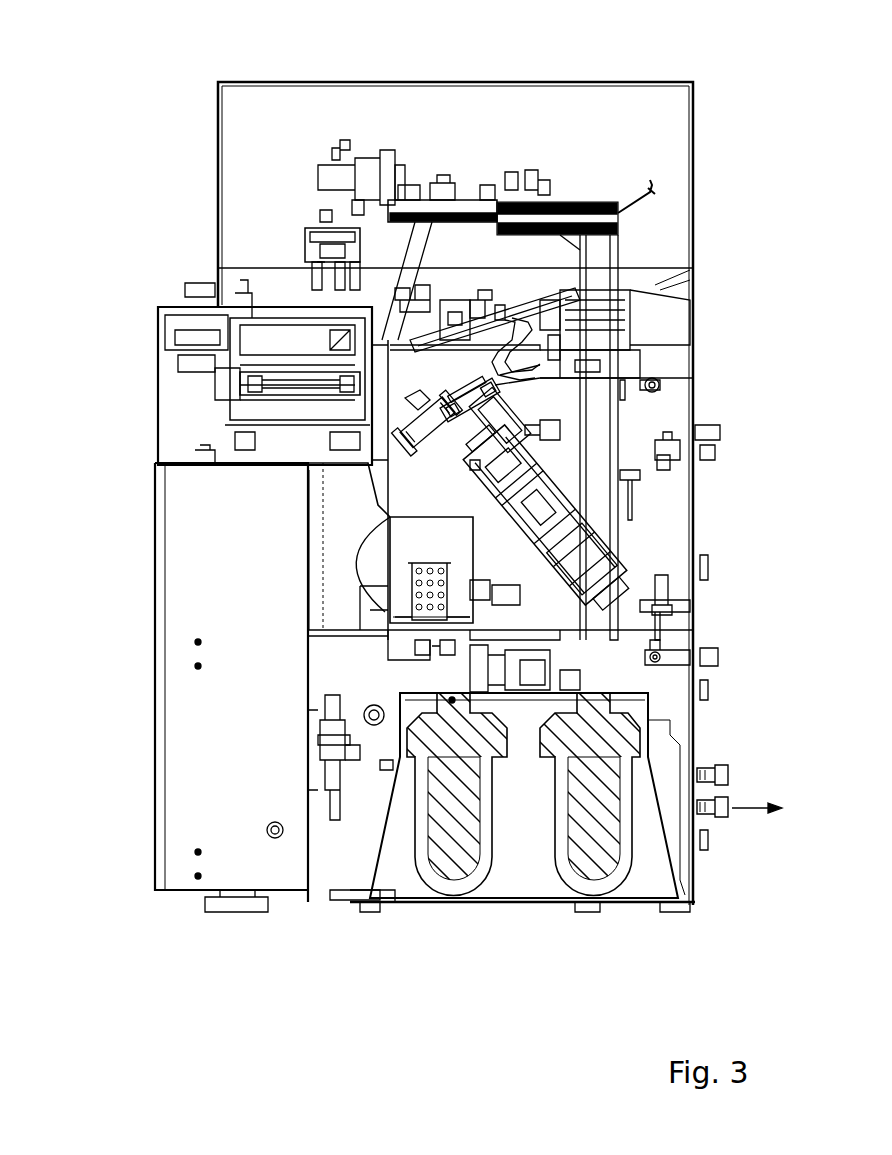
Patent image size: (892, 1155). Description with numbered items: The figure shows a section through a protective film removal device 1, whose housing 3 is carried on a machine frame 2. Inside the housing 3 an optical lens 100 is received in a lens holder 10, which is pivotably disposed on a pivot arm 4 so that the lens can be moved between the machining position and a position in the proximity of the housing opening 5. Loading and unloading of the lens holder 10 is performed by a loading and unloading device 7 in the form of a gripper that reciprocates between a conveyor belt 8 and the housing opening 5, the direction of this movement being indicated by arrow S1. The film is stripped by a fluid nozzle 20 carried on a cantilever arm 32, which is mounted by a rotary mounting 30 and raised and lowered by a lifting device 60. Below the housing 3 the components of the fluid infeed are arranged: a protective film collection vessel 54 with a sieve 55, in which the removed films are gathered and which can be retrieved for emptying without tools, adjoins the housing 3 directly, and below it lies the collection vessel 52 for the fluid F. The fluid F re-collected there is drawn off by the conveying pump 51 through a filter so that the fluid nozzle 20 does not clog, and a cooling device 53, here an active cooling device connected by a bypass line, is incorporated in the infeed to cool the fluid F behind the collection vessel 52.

The protective film removal device 1 is at (135, 84).
The machine frame 2 is at (345, 635).
The housing 3 is at (310, 498).
The pivot arm 4 is at (540, 378).
The housing opening 5 is at (458, 320).
The loading and unloading device 7 is at (338, 252).
The conveyor belt 8 is at (278, 347).
The lens holder 10 is at (480, 400).
The fluid nozzle 20 is at (462, 388).
The rotary mounting 30 is at (500, 397).
The cantilever arm 32 is at (428, 459).
The conveying pump 51 is at (550, 677).
The collection vessel 52 is at (640, 713).
The cooling device 53 is at (742, 770).
The protective film collection vessel 54 is at (415, 545).
The sieve 55 is at (418, 586).
The lifting device 60 is at (585, 530).
The optical lens 100 is at (480, 393).
The direction S1 is at (395, 378).
The fluid F is at (757, 823).